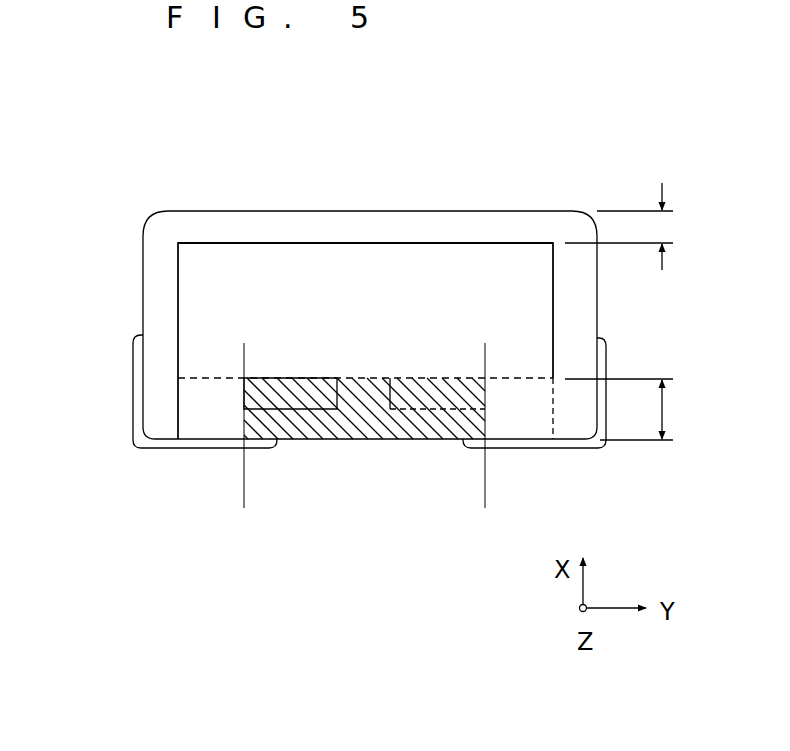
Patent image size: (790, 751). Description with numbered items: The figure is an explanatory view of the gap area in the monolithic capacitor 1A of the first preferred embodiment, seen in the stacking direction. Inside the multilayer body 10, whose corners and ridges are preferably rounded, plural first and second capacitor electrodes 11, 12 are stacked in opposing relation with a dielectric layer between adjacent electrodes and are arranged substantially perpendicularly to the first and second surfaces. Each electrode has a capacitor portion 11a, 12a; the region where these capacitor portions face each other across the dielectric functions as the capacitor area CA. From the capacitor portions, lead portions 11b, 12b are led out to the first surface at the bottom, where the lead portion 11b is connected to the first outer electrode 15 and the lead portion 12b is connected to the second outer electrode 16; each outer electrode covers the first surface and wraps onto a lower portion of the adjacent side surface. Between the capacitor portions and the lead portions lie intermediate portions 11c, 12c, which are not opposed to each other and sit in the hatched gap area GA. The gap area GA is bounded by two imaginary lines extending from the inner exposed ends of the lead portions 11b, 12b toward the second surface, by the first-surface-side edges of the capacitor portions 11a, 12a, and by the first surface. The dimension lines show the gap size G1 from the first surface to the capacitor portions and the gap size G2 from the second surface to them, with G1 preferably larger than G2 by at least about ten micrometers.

The monolithic capacitor 1A is at (310, 152).
The multilayer body 10 is at (142, 263).
The first capacitor electrode 11 is at (250, 240).
The second capacitor electrode 12 is at (250, 240).
The capacitor portion 11a is at (442, 267).
The capacitor portion 12a is at (442, 267).
The lead portion 11b is at (207, 425).
The lead portion 12b is at (554, 420).
The intermediate portion 11c is at (305, 400).
The intermediate portion 12c is at (437, 410).
The first outer electrode 15 is at (133, 398).
The second outer electrode 16 is at (607, 363).
The capacitor area CA is at (365, 310).
The gap area GA is at (365, 412).
The gap size G1 is at (635, 409).
The gap size G2 is at (637, 226).